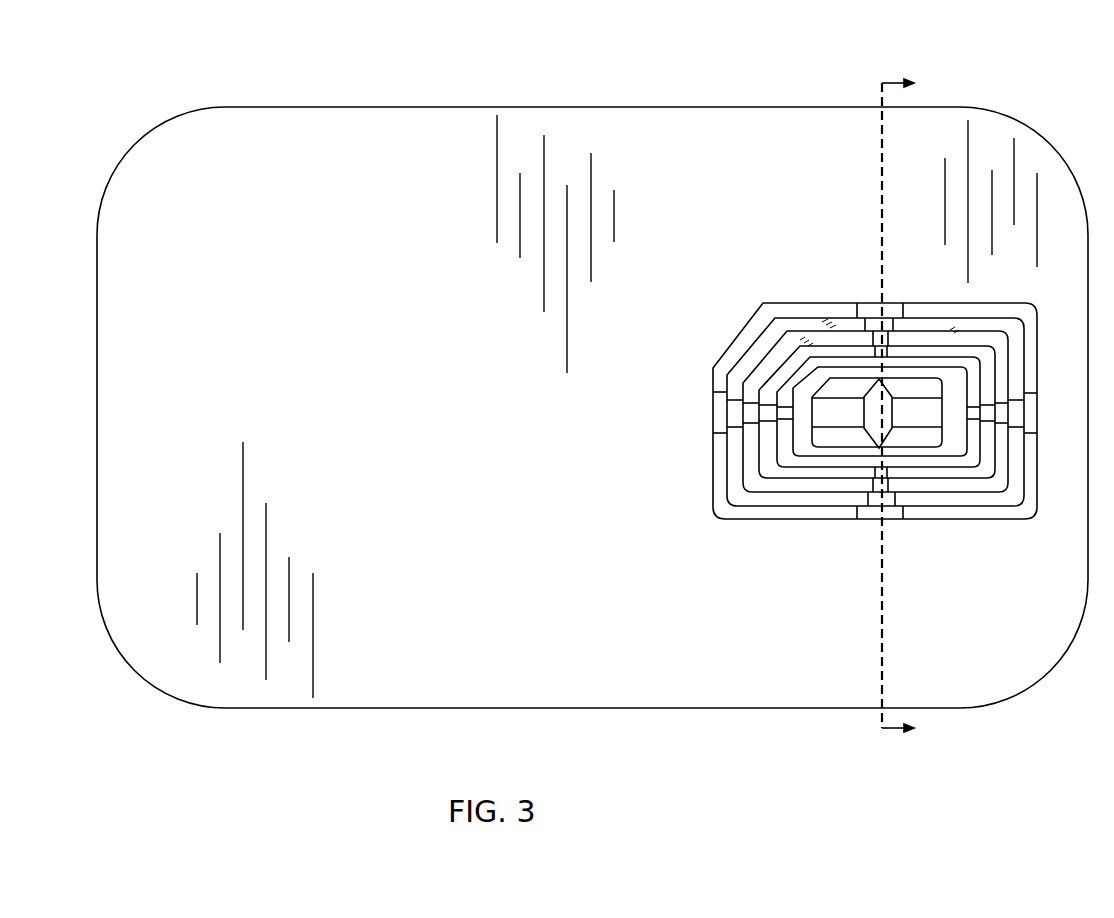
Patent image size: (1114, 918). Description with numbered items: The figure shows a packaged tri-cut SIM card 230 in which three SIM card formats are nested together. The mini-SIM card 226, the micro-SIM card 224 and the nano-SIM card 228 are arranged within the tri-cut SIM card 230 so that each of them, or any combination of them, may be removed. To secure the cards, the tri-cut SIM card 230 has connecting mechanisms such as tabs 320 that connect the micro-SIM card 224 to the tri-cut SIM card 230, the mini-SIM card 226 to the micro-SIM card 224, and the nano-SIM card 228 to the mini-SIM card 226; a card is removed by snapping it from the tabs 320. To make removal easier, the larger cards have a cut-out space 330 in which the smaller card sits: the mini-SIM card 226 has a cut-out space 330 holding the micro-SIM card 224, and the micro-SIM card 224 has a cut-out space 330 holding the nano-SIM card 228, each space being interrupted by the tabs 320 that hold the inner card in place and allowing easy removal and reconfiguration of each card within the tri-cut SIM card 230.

The tri-cut SIM card 230 is at (652, 107).
The mini-SIM card 226 is at (774, 317).
The micro-SIM card 224 is at (742, 468).
The nano-SIM card 228 is at (946, 470).
The tabs 320 is at (757, 404).
The cut-out space 330 is at (815, 357).